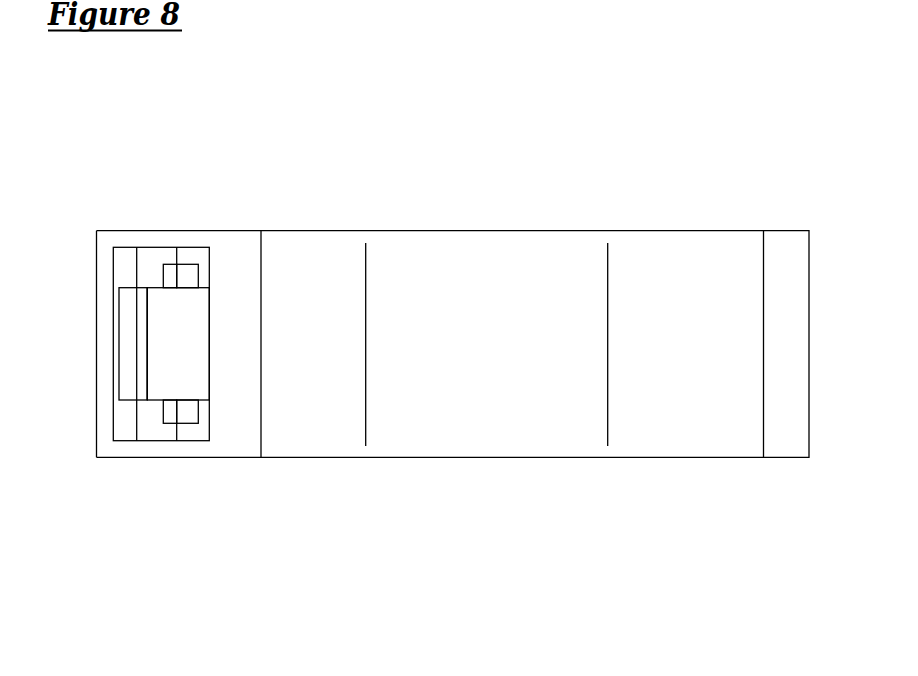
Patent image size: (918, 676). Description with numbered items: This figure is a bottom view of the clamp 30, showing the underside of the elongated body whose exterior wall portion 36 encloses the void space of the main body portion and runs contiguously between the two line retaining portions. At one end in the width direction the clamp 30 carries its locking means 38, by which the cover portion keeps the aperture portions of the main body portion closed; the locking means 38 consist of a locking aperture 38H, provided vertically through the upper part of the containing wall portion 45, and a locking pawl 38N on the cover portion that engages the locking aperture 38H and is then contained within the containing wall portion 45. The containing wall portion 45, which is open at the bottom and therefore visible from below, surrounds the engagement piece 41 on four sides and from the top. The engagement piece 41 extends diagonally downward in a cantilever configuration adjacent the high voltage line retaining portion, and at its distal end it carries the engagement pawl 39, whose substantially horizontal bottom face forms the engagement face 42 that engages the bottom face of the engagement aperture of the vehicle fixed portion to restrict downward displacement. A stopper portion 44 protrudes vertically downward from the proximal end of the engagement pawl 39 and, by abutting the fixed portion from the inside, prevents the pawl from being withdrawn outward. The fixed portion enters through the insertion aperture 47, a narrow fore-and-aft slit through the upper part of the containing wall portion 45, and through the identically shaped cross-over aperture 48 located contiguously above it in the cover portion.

The clamp 30 is at (403, 142).
The exterior wall portion 36 is at (546, 383).
The locking means 38 is at (792, 315).
The locking pawl 38N is at (168, 277).
The locking aperture 38H is at (178, 255).
The engagement pawl 39 is at (125, 347).
The engagement piece 41 is at (185, 355).
The engagement face 42 is at (128, 377).
The stopper portion 44 is at (143, 372).
The containing wall portion 45 is at (102, 277).
The insertion aperture 47 is at (139, 261).
The cross-over aperture 48 is at (136, 264).